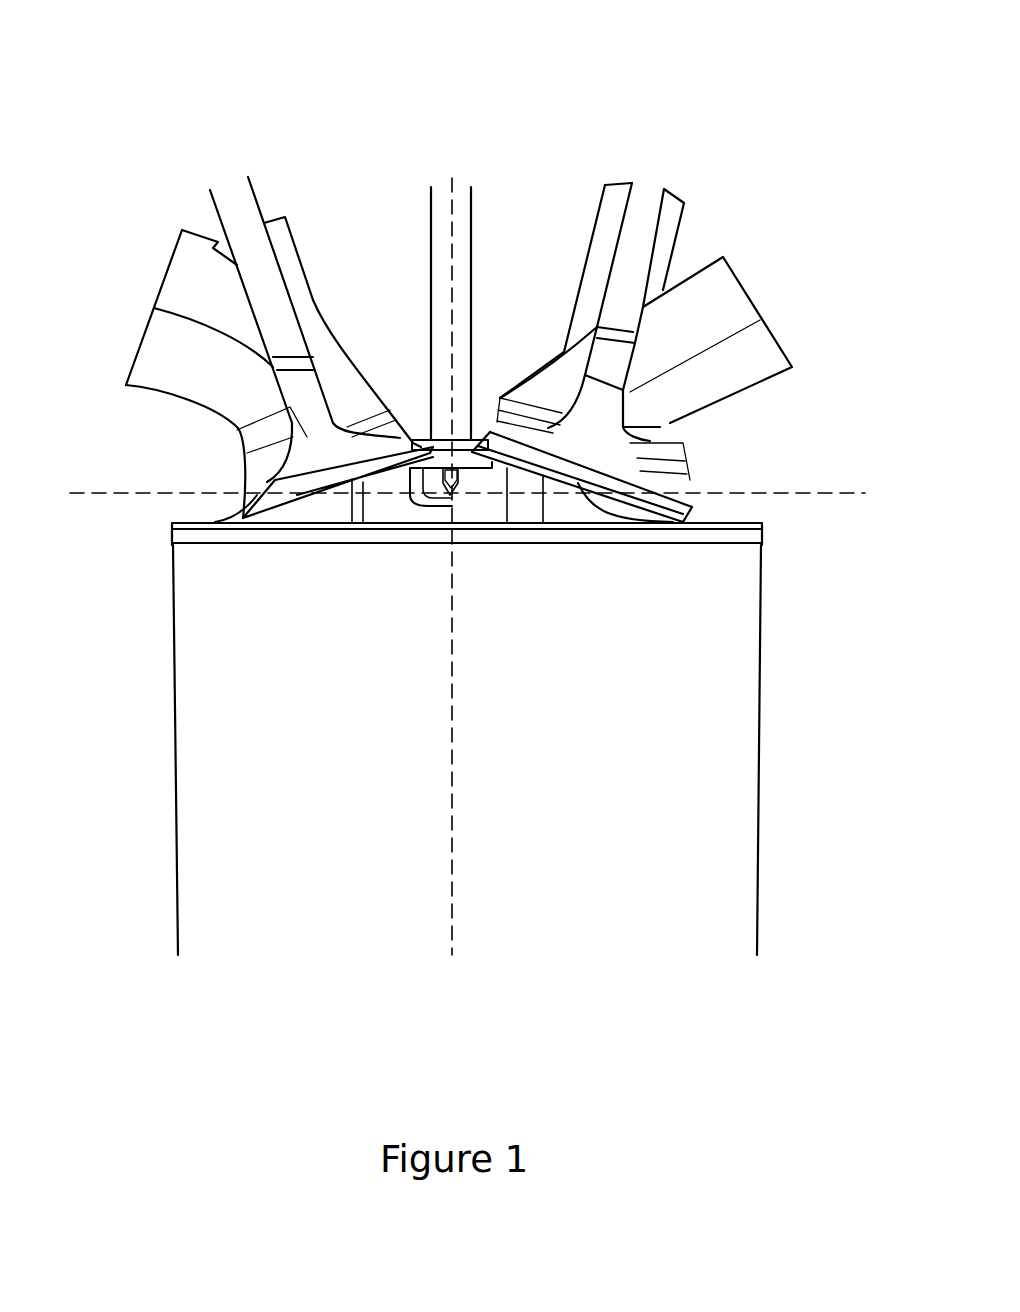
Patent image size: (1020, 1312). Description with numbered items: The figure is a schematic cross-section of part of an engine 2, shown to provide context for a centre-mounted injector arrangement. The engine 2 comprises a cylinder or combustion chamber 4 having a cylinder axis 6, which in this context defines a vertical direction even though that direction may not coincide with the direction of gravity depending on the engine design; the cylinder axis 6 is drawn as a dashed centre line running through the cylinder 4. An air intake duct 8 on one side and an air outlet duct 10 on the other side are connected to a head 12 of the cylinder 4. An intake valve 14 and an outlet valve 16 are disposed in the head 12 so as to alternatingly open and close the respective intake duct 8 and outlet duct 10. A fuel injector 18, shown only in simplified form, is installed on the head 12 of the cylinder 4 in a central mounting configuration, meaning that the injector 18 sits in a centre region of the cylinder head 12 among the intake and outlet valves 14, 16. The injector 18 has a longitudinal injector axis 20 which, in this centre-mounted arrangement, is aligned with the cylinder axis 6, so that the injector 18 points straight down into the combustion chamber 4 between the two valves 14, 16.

The engine 2 is at (203, 119).
The cylinder 4 is at (257, 795).
The cylinder axis 6 is at (480, 301).
The air intake duct 8 is at (200, 360).
The air outlet duct 10 is at (723, 313).
The head 12 is at (183, 522).
The intake valve 14 is at (305, 436).
The outlet valve 16 is at (684, 447).
The fuel injector 18 is at (430, 250).
The longitudinal injector axis 20 is at (453, 233).